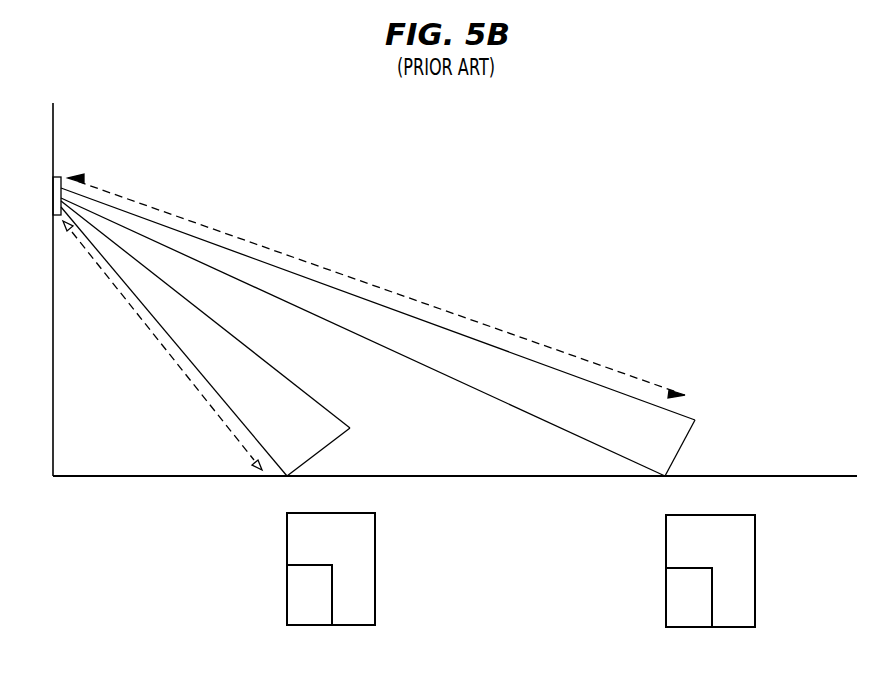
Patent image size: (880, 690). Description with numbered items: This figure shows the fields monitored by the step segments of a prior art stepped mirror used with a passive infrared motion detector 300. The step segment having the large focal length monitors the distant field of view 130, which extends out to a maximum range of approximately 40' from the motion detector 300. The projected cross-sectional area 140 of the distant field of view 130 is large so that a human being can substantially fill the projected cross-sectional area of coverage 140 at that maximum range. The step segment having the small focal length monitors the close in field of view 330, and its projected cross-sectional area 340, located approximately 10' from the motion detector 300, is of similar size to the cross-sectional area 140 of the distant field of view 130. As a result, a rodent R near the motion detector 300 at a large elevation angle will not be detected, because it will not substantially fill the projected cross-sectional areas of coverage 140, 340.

The motion detector 300 is at (57, 177).
The maximum range 40' is at (376, 286).
The close-in distance 10' is at (162, 345).
The distant field of view 130 is at (542, 412).
The projected cross-sectional area of the distant field of view 140 is at (685, 448).
The close in field of view 330 is at (285, 390).
The projected cross-sectional area of the closer field of view 340 is at (325, 447).